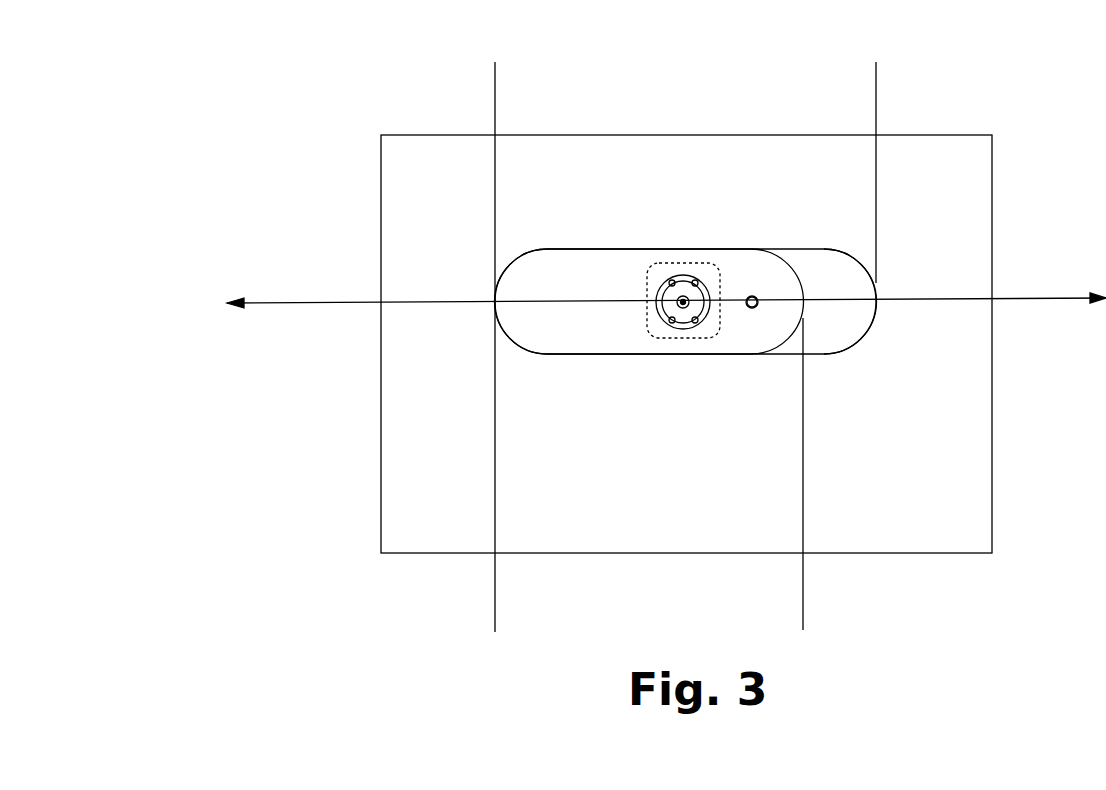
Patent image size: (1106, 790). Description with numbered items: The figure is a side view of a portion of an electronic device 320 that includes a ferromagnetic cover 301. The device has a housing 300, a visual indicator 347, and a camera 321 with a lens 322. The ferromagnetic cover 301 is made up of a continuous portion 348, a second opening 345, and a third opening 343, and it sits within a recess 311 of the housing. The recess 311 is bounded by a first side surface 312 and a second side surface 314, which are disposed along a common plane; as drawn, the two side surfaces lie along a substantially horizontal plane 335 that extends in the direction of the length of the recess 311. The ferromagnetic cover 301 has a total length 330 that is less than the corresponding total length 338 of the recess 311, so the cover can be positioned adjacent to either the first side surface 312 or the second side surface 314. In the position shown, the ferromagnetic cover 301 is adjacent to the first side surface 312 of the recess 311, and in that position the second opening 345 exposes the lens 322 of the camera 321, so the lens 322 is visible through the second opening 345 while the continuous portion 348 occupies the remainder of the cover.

The housing 300 is at (418, 130).
The ferromagnetic cover 301 is at (533, 301).
The recess 311 is at (850, 301).
The first side surface 312 is at (497, 318).
The second side surface 314 is at (876, 327).
The electronic device 320 is at (449, 80).
The camera 321 is at (664, 322).
The lens 322 is at (680, 326).
The total length 330 is at (803, 621).
The substantially horizontal plane 335 is at (645, 295).
The total length 338 is at (876, 73).
The third opening 343 is at (748, 308).
The second opening 345 is at (689, 262).
The visual indicator 347 is at (752, 296).
The continuous portion 348 is at (583, 278).